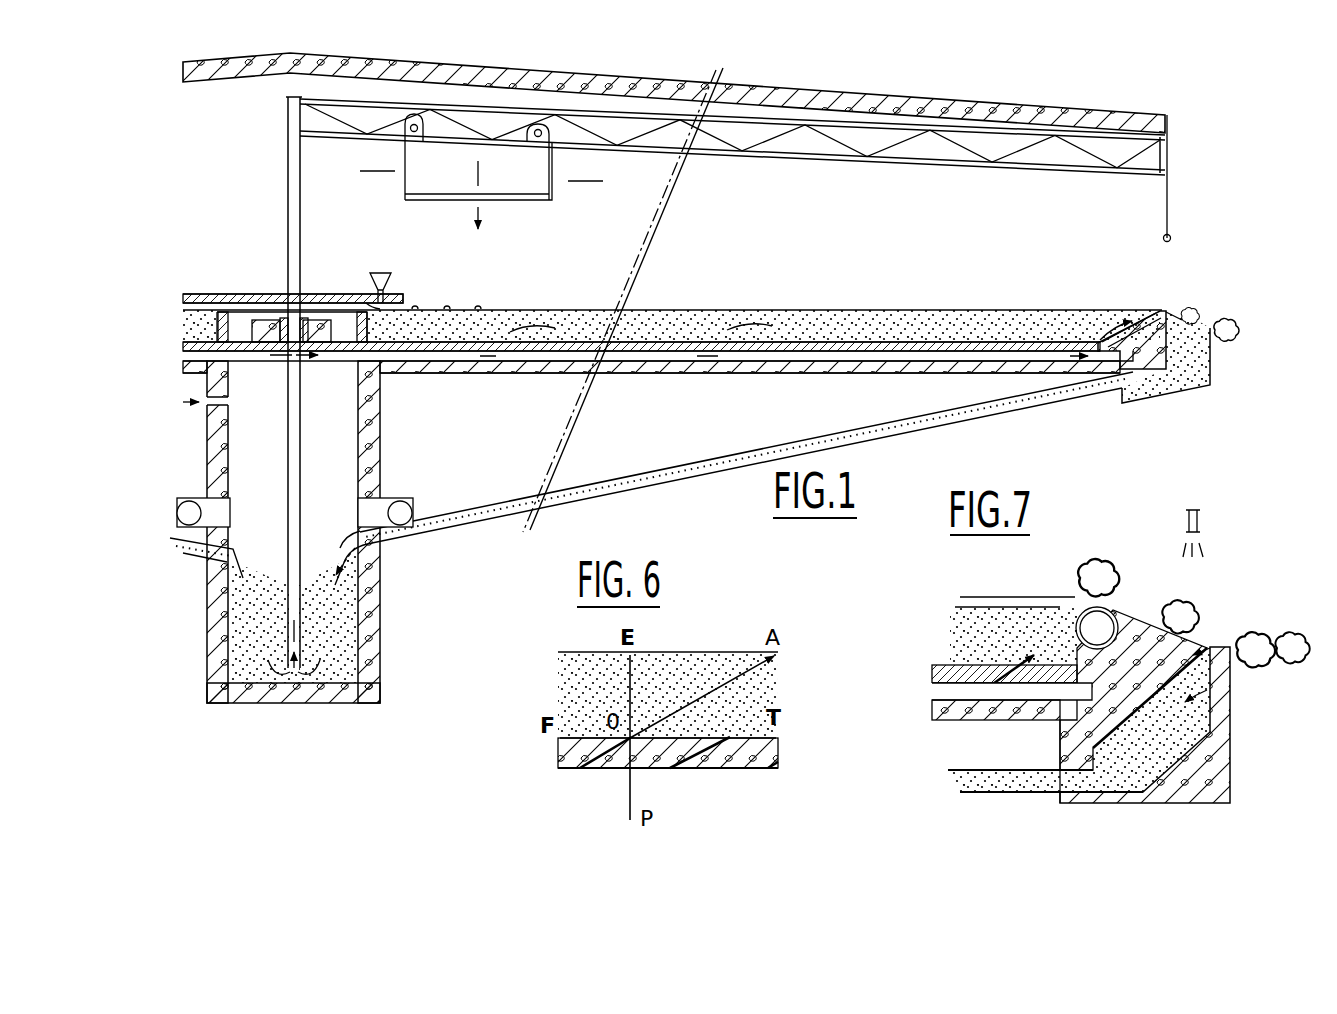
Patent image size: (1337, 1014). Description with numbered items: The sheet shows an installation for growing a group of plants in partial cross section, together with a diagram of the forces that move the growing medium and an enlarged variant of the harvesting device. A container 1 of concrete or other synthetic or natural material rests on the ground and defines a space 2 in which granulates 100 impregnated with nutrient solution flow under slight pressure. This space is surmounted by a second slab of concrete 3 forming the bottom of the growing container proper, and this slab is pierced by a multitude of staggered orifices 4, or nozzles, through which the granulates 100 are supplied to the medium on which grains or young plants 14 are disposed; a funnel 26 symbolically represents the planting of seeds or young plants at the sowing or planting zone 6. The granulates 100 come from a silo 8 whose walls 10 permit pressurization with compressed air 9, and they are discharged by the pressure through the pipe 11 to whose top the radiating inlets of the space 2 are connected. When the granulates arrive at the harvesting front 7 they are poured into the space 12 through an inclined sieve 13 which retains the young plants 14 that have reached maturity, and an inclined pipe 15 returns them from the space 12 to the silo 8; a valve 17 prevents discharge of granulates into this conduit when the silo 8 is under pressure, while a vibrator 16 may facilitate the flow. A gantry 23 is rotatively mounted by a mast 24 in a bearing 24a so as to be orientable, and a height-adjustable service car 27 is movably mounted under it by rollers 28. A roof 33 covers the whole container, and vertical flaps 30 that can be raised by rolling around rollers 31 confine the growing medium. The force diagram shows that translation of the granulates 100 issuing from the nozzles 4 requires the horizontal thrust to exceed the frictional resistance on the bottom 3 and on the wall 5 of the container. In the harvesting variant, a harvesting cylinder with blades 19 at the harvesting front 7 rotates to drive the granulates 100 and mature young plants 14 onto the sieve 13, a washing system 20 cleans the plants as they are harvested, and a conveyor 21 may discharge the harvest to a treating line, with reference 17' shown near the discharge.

In FIG. 1, the container 1 is at (617, 372).
In FIG. 7, the container 1 is at (940, 720).
In FIG. 1, the space 2 is at (665, 364).
In FIG. 7, the space 2 is at (940, 690).
In FIG. 1, the second slab of concrete 3 is at (770, 353).
In FIG. 6, the second slab of concrete 3 is at (730, 768).
In FIG. 7, the second slab of concrete 3 is at (960, 685).
In FIG. 1, the orifices 4 is at (760, 344).
In FIG. 6, the orifices 4 is at (600, 768).
In FIG. 7, the orifices 4 is at (970, 675).
In FIG. 1, the wall of the container 5 is at (1150, 318).
In FIG. 1, the binder supply point 6 is at (370, 306).
In FIG. 1, the harvesting front 7 is at (1170, 306).
In FIG. 7, the harvesting front 7 is at (1077, 570).
In FIG. 1, the silo 8 is at (337, 612).
In FIG. 1, the compressed air 9 is at (203, 413).
In FIG. 1, the walls of the silo 10 is at (381, 620).
In FIG. 1, the pipe 11 is at (307, 640).
In FIG. 1, the space 12 is at (1205, 357).
In FIG. 7, the space 12 is at (1230, 690).
In FIG. 1, the inclined sieve 13 is at (1210, 330).
In FIG. 7, the inclined sieve 13 is at (1205, 645).
In FIG. 1, the young plants 14 is at (420, 306).
In FIG. 7, the young plants 14 is at (1195, 612).
In FIG. 1, the pipe 15 is at (500, 528).
In FIG. 1, the vibrator 16 is at (405, 523).
In FIG. 1, the valve 17 is at (303, 558).
In FIG. 7, the spray cloud 17' is at (1268, 633).
In FIG. 7, the blades 19 is at (1092, 626).
In FIG. 7, the washing system 20 is at (1199, 522).
In FIG. 7, the conveyor 21 is at (1287, 665).
In FIG. 1, the gantry 23 is at (331, 103).
In FIG. 1, the mast 24 is at (287, 147).
In FIG. 1, the bearing 24a is at (286, 310).
In FIG. 1, the funnel 26 is at (378, 273).
In FIG. 1, the service car 27 is at (405, 192).
In FIG. 1, the rollers 28 is at (415, 135).
In FIG. 1, the vertical flaps 30 is at (1168, 145).
In FIG. 1, the rollers 31 is at (1172, 238).
In FIG. 1, the roof 33 is at (942, 108).
In FIG. 1, the granulates 100 is at (945, 322).
In FIG. 6, the granulates 100 is at (697, 660).
In FIG. 7, the granulates 100 is at (985, 620).